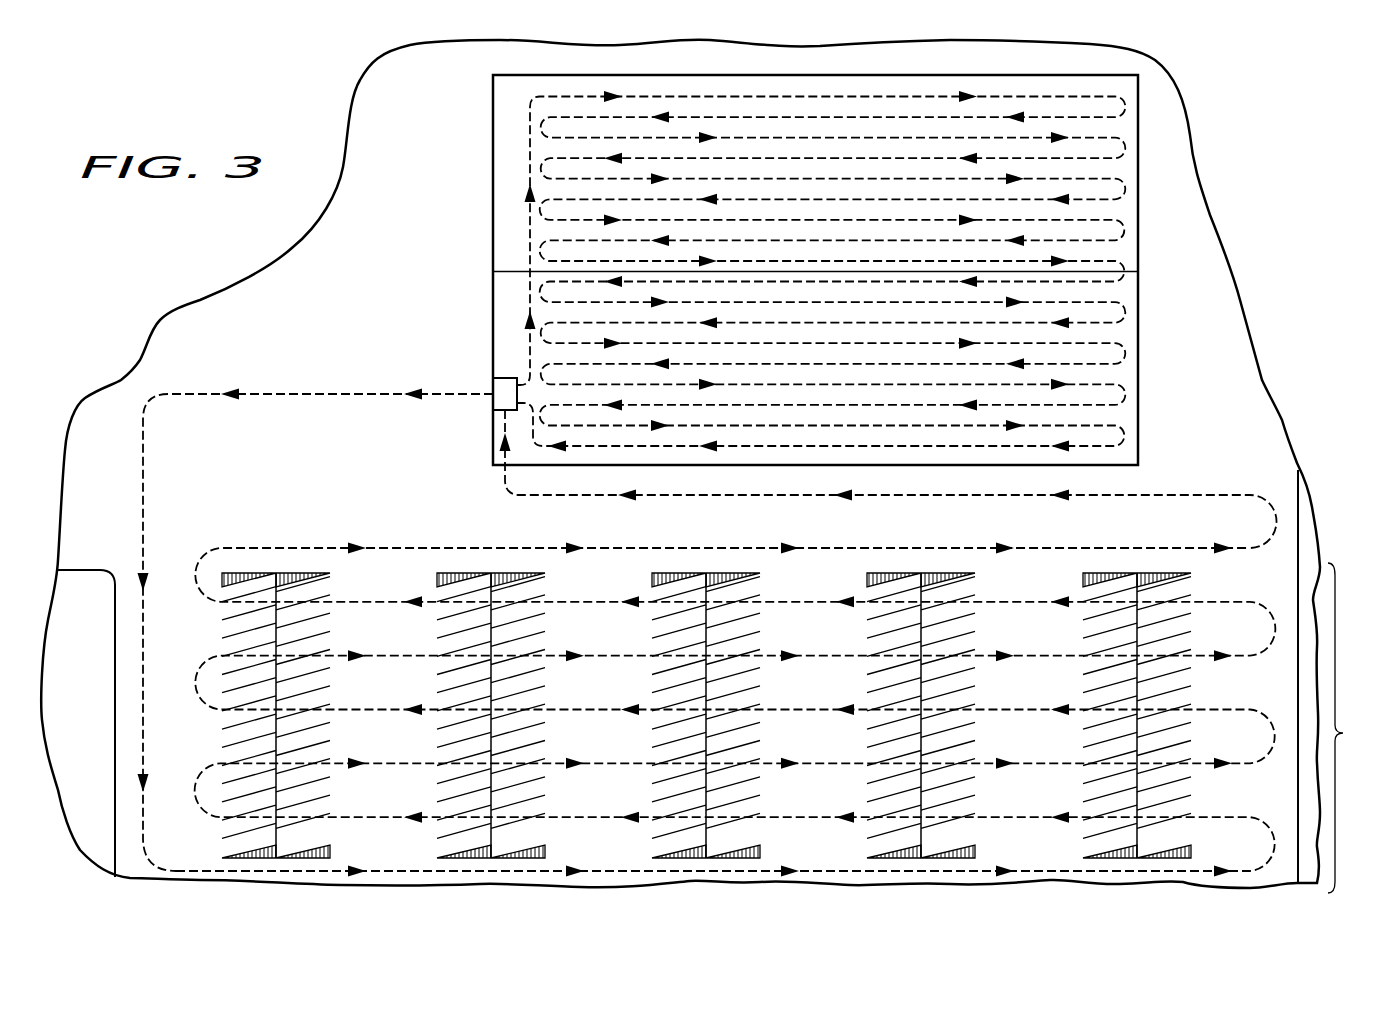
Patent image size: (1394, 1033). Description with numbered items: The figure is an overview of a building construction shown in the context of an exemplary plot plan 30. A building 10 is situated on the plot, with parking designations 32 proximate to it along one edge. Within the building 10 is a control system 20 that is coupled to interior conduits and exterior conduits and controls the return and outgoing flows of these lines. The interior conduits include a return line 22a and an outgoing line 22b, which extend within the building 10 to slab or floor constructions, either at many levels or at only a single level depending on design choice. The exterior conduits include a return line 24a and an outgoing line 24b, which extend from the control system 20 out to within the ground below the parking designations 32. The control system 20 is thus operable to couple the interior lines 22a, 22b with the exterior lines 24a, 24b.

The building 10 is at (420, 163).
The control system 20 is at (505, 388).
The return line 22a is at (1137, 447).
The outgoing line 22b is at (528, 351).
The return line 24a is at (568, 493).
The outgoing line 24b is at (277, 392).
The plot plan 30 is at (1274, 143).
The parking designations 32 is at (1354, 728).